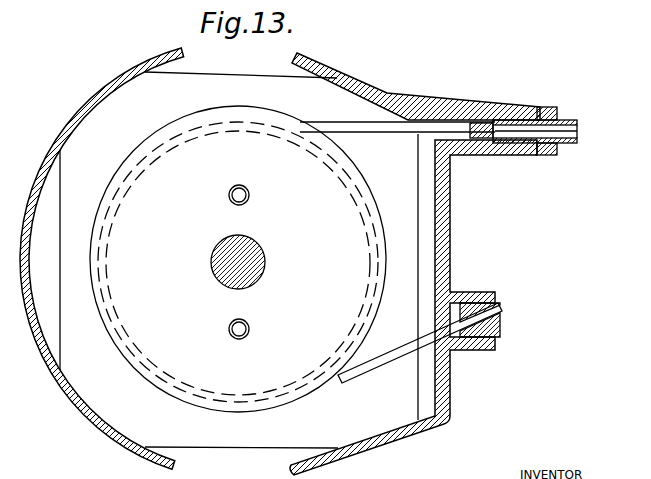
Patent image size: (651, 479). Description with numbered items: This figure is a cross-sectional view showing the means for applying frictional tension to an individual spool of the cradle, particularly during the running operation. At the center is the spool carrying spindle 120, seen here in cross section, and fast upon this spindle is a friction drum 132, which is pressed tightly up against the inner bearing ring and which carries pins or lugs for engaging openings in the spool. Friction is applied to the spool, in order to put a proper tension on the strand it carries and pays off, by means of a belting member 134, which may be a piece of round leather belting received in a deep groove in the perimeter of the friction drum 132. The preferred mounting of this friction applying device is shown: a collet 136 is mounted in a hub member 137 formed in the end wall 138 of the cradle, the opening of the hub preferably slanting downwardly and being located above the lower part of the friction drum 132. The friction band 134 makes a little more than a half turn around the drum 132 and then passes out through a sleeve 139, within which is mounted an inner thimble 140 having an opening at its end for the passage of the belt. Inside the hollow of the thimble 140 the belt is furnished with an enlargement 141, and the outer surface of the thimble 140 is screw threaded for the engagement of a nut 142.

The spool carrying spindle 120 is at (264, 252).
The friction drum 132 is at (339, 230).
The belting member 134 is at (388, 358).
The collet 136 is at (473, 351).
The hub member 137 is at (472, 292).
The end wall 138 is at (451, 238).
The sleeve 139 is at (473, 105).
The inner thimble 140 is at (562, 118).
The enlargement 141 is at (578, 131).
The nut 142 is at (548, 157).